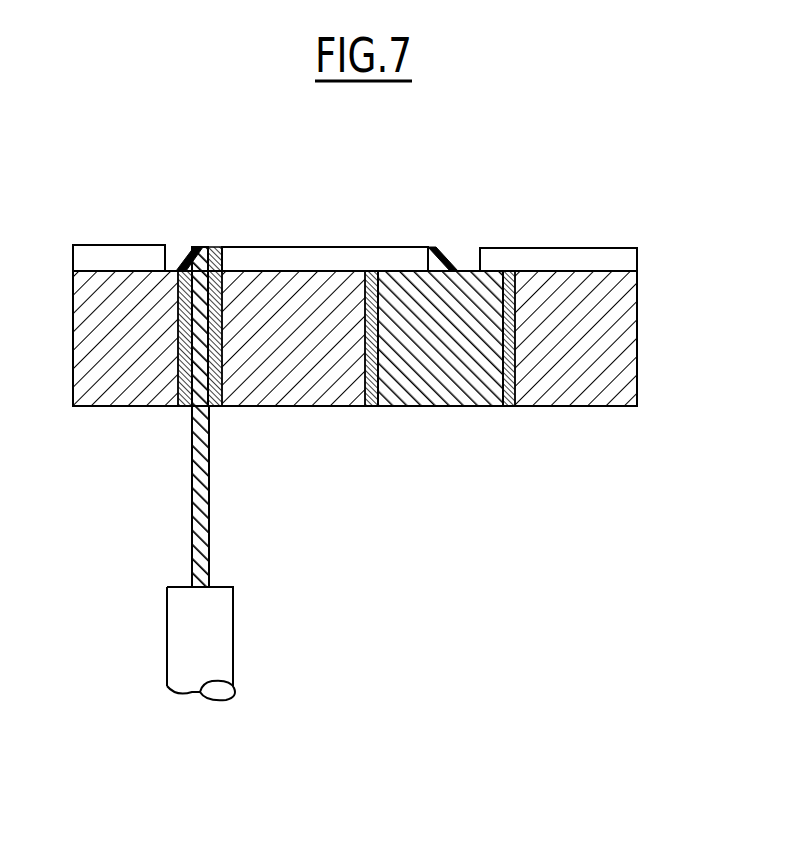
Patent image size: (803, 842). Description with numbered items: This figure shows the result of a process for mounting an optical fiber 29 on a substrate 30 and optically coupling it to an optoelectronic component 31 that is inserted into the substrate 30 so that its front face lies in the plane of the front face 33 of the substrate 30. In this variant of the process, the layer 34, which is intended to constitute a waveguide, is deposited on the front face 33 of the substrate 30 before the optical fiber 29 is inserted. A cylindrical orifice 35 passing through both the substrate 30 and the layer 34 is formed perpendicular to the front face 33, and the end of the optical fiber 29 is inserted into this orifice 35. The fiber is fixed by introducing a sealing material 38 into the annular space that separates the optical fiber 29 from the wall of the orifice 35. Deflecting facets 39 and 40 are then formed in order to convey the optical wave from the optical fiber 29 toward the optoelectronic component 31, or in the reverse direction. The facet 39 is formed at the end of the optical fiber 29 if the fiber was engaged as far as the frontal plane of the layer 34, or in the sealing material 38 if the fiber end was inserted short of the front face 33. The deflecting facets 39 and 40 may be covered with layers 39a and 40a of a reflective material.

The optical fiber 29 is at (205, 517).
The substrate 30 is at (592, 343).
The optoelectronic component 31 is at (435, 355).
The front face of the substrate 33 is at (326, 270).
The layer 34 is at (612, 260).
The cylindrical orifice 35 is at (222, 353).
The sealing material 38 is at (178, 365).
The deflecting facet 39 is at (200, 248).
The layer of reflective material 39a is at (188, 260).
The deflecting facet 40 is at (438, 247).
The layer of reflective material 40a is at (448, 262).